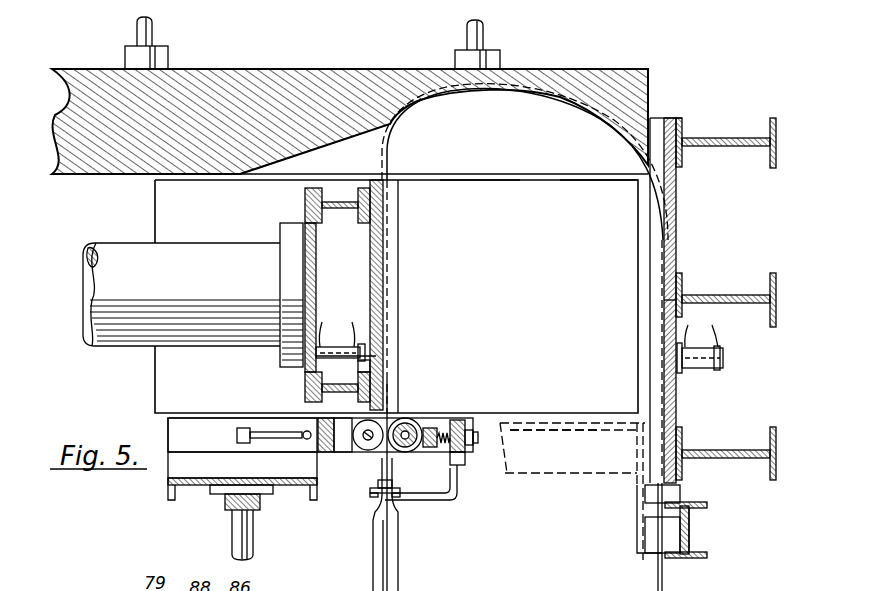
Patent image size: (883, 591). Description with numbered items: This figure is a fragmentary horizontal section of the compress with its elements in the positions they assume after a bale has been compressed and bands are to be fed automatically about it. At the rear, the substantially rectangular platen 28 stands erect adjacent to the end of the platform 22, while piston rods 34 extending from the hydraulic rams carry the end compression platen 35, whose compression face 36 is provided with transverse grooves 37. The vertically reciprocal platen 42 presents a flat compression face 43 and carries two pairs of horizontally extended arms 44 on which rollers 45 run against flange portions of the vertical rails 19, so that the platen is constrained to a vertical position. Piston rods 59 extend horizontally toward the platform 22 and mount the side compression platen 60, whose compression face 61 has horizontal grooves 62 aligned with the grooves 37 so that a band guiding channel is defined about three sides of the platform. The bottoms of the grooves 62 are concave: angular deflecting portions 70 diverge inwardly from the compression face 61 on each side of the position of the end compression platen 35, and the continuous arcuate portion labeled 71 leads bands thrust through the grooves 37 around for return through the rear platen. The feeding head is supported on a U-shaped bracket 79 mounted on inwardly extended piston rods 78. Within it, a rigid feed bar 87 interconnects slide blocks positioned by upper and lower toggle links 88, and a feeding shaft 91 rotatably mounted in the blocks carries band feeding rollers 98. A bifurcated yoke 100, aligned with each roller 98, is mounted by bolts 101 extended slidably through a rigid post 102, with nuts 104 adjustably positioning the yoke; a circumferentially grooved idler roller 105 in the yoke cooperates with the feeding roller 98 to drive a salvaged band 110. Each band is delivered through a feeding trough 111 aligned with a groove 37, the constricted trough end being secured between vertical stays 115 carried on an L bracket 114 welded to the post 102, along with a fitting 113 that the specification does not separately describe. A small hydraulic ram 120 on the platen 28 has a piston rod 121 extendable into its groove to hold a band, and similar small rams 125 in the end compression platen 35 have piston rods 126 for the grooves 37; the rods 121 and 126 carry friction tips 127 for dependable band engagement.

The vertical rails 19 is at (695, 553).
The platform 22 is at (537, 200).
The platen 28 is at (677, 217).
The piston rods 34 is at (105, 275).
The end compression platen 35 is at (376, 263).
The compression face 36 is at (400, 283).
The transverse grooves 37 is at (390, 239).
The vertically reciprocal platen 42 is at (560, 463).
The compression face 43 is at (580, 422).
The horizontally extended arms 44 is at (643, 488).
The rollers 45 is at (645, 498).
The piston rods 59 is at (150, 29).
The side compression platen 60 is at (374, 86).
The compression face 61 is at (474, 180).
The horizontal grooves 62 is at (602, 152).
The angular deflecting portions 70 is at (338, 138).
The curved guide sheet 71 is at (606, 110).
The piston rods 78 is at (237, 535).
The U-shaped bracket 79 is at (172, 500).
The feed bar 87 is at (320, 440).
The toggle links 88 is at (272, 435).
The feeding shaft 91 is at (368, 450).
The band feeding rollers 98 is at (355, 447).
The bifurcated yoke 100 is at (430, 427).
The bolts 101 is at (445, 431).
The rigid post 102 is at (468, 421).
The nuts 104 is at (479, 438).
The idler roller 105 is at (415, 449).
The bands 110 is at (393, 576).
The feeding trough 111 is at (399, 556).
The collar 113 is at (381, 478).
The L brackets 114 is at (457, 502).
The vertical stays 115 is at (380, 497).
The small hydraulic ram 120 is at (724, 358).
The piston rod 121 is at (681, 378).
The small hydraulic rams 125 is at (336, 345).
The piston rod 126 is at (370, 369).
The friction tips 127 is at (378, 357).